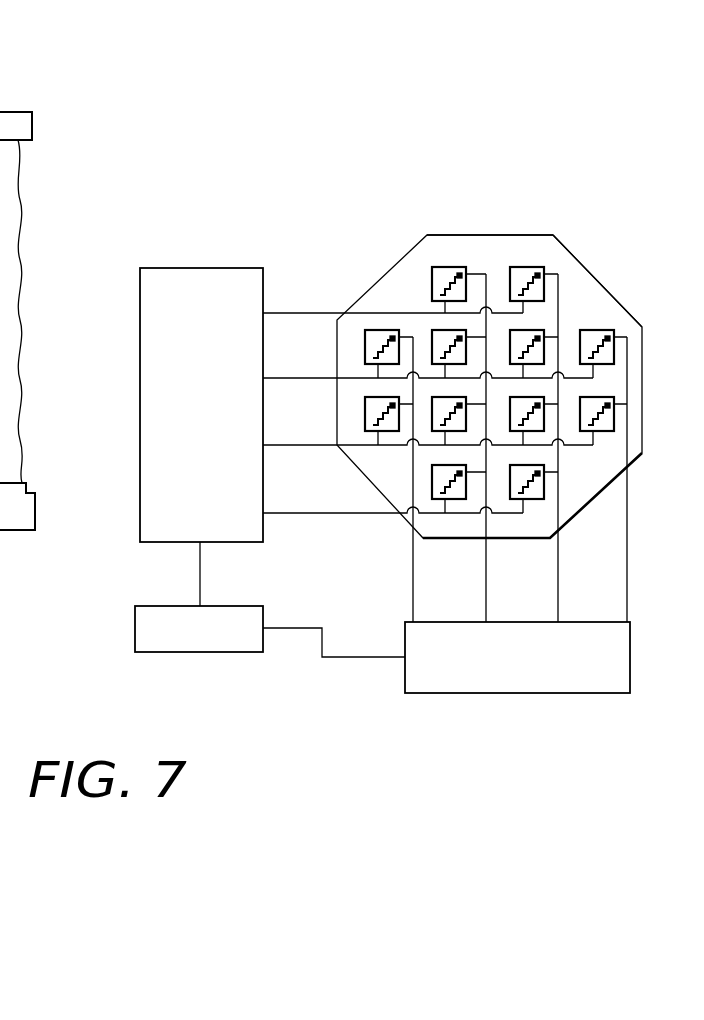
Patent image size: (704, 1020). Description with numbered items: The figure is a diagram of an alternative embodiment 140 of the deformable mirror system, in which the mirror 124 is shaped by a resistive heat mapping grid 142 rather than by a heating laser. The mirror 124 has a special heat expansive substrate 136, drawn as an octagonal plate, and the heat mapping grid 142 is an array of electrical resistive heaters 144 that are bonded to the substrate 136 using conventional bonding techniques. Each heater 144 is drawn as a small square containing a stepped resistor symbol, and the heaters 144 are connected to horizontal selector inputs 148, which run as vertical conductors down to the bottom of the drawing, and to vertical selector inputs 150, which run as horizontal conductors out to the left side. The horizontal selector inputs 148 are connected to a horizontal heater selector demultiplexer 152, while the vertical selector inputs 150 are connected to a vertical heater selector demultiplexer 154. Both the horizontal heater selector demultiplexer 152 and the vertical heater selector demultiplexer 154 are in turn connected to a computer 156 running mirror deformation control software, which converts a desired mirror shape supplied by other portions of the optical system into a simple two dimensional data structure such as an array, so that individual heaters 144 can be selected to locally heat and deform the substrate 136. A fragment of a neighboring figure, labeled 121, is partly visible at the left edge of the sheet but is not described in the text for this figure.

The partial component of adjacent figure 121 is at (0, 77).
The mirror 124 is at (480, 226).
The heat expansive substrate 136 is at (620, 300).
The alternative embodiment 140 is at (434, 142).
The resistive heat mapping grid 142 is at (580, 276).
The electrical resistive heaters 144 is at (614, 352).
The horizontal selector inputs 148 is at (413, 617).
The vertical selector inputs 150 is at (343, 513).
The horizontal heater selector demultiplexer 152 is at (480, 693).
The vertical heater selector demultiplexer 154 is at (200, 268).
The computer 156 is at (225, 652).